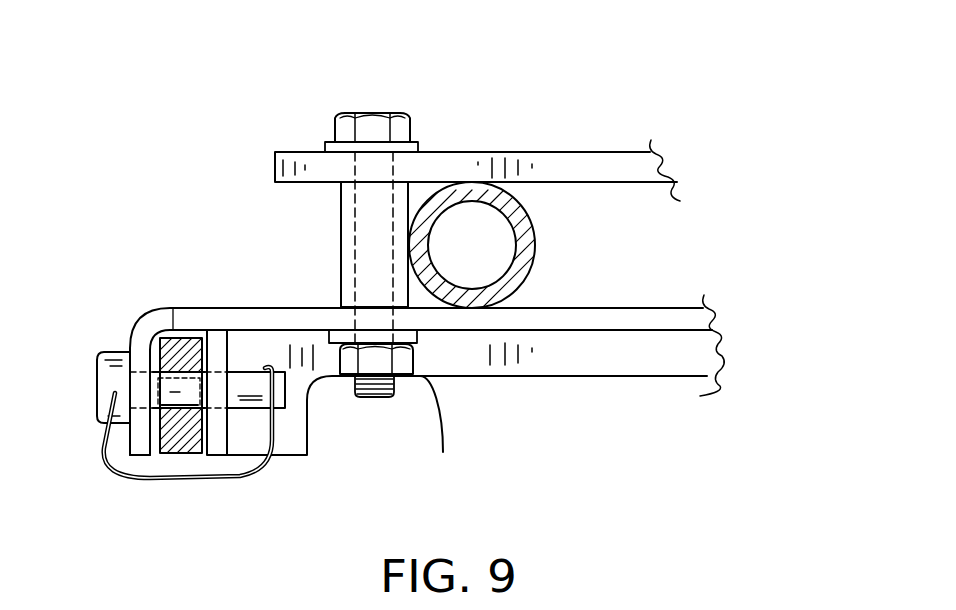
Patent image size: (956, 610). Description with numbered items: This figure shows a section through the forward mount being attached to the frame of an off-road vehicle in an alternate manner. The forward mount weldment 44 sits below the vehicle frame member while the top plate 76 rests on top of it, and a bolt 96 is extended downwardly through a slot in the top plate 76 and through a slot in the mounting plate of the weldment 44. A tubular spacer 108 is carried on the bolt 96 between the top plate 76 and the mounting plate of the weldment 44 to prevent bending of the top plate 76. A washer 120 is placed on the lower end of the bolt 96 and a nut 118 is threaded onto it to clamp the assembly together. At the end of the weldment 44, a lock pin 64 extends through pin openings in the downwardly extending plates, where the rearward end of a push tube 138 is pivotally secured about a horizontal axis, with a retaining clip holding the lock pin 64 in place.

The forward mount weldment 44 is at (601, 305).
The lock pin 64 is at (110, 378).
The top plate 76 is at (640, 58).
The bolt 96 is at (380, 127).
The tubular spacer 108 is at (341, 245).
The nut 118 is at (405, 368).
The washer 120 is at (415, 344).
The push tube 138 is at (185, 450).